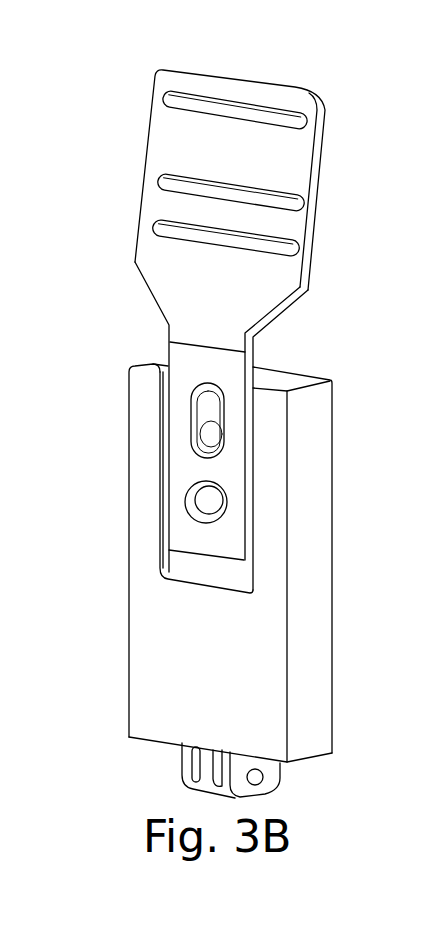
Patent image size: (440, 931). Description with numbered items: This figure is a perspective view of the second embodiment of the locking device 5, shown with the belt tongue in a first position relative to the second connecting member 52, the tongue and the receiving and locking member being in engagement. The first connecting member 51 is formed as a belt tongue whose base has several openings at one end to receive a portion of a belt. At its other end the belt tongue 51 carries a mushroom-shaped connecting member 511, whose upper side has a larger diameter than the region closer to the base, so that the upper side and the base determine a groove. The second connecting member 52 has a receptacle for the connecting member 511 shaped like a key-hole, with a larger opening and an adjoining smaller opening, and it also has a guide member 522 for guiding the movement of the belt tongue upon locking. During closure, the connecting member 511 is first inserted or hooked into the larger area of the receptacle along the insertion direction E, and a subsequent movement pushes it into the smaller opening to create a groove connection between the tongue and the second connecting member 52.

The locking device 5 is at (274, 324).
The first connecting member 51 is at (320, 140).
The second connecting member 52 is at (165, 697).
The connecting member 511 is at (213, 507).
The guide member 522 is at (217, 437).
The insertion direction E is at (204, 503).